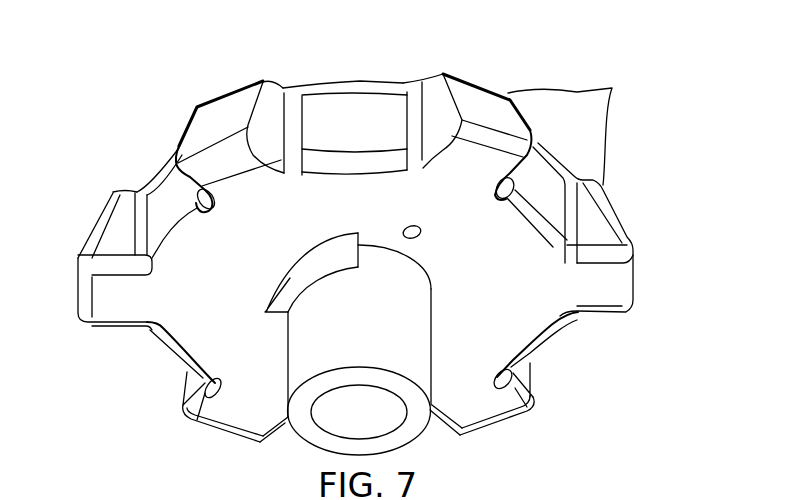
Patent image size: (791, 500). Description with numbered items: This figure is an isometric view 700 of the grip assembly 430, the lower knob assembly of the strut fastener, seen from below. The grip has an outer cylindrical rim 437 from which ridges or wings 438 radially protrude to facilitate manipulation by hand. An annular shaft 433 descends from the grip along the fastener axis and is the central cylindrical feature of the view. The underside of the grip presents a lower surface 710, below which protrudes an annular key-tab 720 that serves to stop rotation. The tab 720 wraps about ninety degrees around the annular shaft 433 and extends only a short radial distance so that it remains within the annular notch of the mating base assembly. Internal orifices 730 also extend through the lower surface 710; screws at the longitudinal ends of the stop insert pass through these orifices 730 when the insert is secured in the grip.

The isometric view 700 is at (594, 60).
The grip assembly 430 is at (690, 65).
The annular shaft 433 is at (381, 347).
The outer cylindrical rim 437 is at (376, 131).
The wings 438 is at (578, 130).
The lower surface 710 is at (203, 272).
The annular key-tab 720 is at (282, 270).
The internal orifices 730 is at (422, 233).